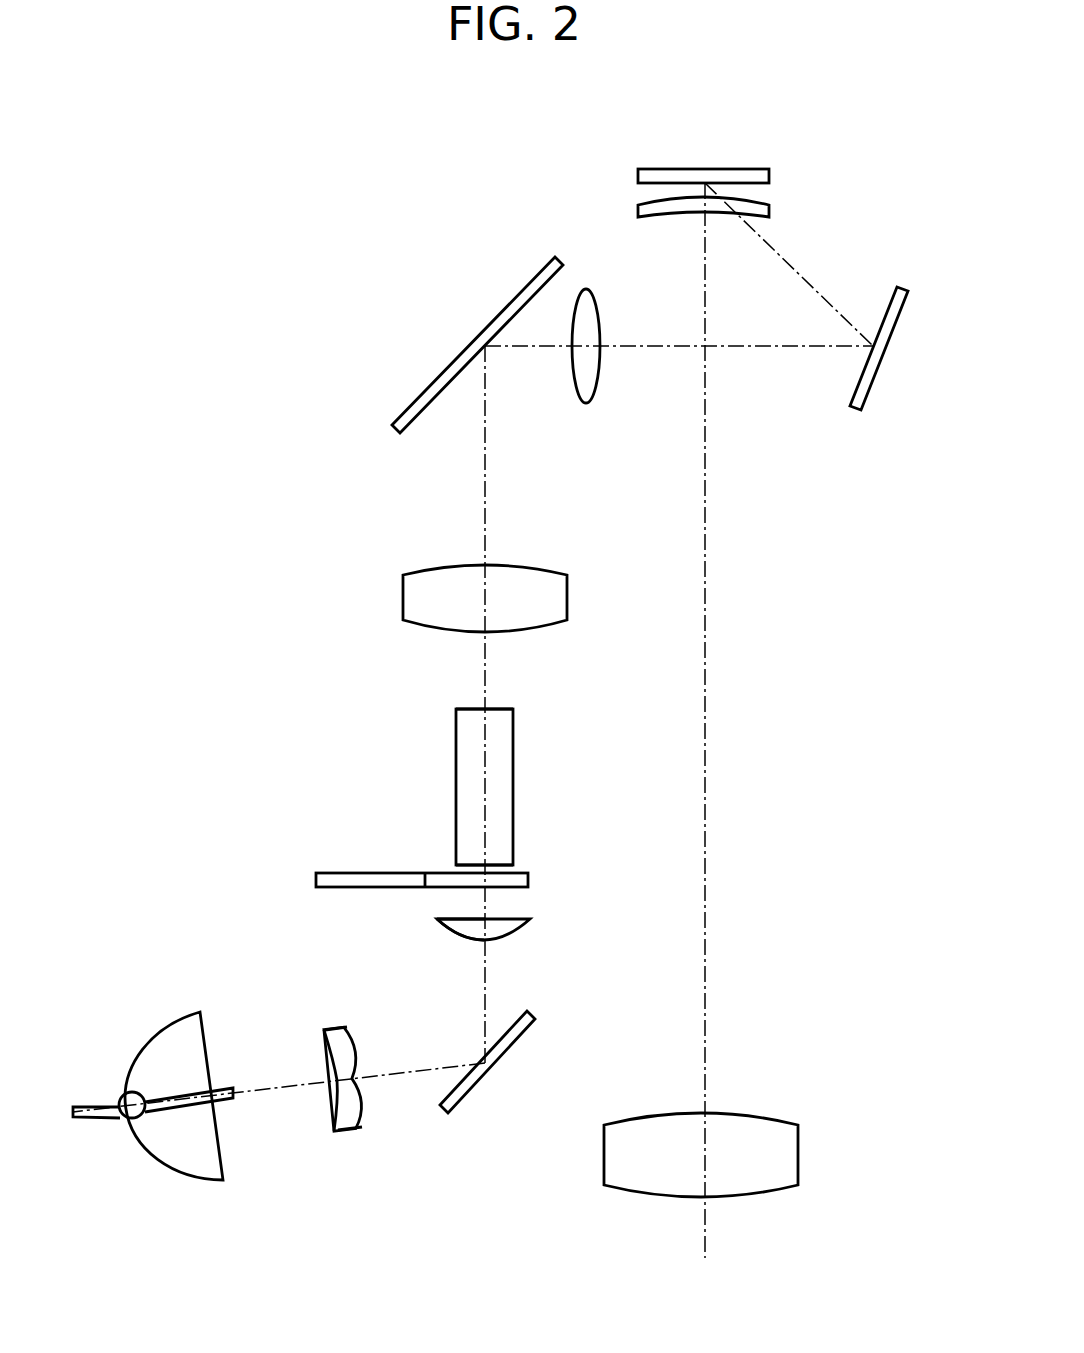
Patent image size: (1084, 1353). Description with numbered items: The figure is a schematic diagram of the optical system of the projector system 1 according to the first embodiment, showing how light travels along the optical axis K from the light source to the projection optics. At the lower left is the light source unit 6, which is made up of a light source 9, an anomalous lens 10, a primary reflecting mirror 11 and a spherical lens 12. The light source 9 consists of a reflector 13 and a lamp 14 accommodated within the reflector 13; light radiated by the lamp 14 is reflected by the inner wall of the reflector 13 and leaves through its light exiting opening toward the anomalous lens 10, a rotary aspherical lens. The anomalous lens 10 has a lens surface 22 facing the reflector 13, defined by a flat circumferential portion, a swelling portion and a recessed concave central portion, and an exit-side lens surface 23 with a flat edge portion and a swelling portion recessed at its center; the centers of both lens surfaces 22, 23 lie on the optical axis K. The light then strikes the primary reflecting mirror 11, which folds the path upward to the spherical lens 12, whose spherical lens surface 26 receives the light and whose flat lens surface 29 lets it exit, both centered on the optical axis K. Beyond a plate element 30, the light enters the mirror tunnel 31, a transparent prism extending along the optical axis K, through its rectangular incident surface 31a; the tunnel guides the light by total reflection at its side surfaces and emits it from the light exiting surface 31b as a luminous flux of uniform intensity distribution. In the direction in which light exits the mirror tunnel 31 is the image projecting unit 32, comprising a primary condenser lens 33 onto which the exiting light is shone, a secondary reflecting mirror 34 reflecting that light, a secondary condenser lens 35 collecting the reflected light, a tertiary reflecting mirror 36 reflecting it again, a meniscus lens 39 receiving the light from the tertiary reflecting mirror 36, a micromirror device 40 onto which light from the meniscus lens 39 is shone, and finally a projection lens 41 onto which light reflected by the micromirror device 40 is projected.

The projector 1 is at (298, 205).
The light source unit 6 is at (510, 1156).
The light source 9 is at (130, 1005).
The anomalous lens 10 is at (352, 1128).
The primary reflecting mirror 11 is at (478, 1080).
The spherical lens 12 is at (530, 921).
The reflector 13 is at (185, 1178).
The lamp 14 is at (125, 1118).
The lens surface 22 is at (332, 1113).
The lens surface 23 is at (353, 1034).
The lens surface 26 is at (456, 936).
The lens surface 29 is at (456, 919).
The polarization conversion element 30 is at (336, 873).
The mirror tunnel 31 is at (467, 748).
The incident surface 31a is at (498, 869).
The light exiting surface 31b is at (498, 709).
The image projecting unit 32 is at (291, 490).
The primary condenser lens 33 is at (568, 590).
The secondary reflecting mirror 34 is at (410, 406).
The secondary condenser lens 35 is at (587, 287).
The tertiary reflecting mirror 36 is at (903, 287).
The meniscus lens 39 is at (769, 209).
The micromirror device 40 is at (638, 172).
The projection lens 41 is at (798, 1155).
The optical axis K is at (793, 263).